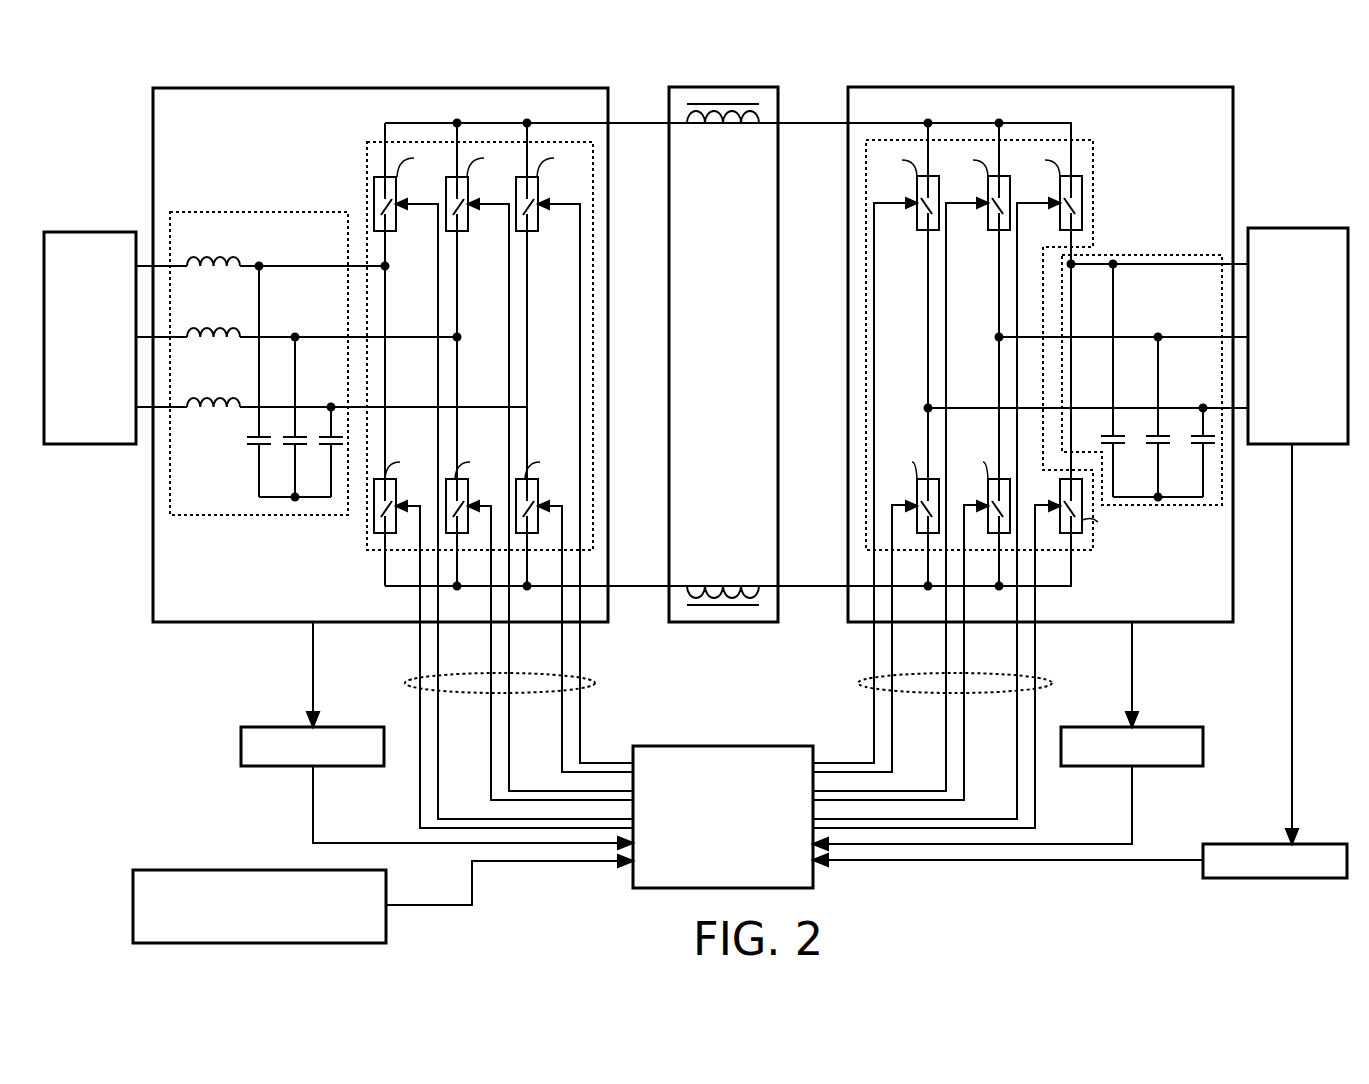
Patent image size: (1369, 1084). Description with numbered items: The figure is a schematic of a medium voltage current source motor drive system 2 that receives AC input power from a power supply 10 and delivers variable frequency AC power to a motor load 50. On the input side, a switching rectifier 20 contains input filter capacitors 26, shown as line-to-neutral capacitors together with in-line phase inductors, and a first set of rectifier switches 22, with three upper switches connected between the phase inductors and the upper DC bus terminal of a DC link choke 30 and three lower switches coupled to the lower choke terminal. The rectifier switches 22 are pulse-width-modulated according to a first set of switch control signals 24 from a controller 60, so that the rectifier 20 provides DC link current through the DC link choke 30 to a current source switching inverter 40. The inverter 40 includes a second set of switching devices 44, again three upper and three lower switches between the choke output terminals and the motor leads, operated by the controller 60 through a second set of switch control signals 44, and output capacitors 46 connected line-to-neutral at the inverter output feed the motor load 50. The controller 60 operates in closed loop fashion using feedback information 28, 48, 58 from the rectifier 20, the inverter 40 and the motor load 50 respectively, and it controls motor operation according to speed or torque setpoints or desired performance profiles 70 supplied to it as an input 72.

The medium voltage current source motor drive system 2 is at (122, 81).
The power supply 10 is at (90, 338).
The switching rectifier 20 is at (153, 110).
The rectifier switches 22 is at (367, 158).
The first set of switch control signals 24 is at (405, 683).
The input filter capacitors 26 is at (170, 472).
The feedback information from the rectifier 28 is at (241, 748).
The DC link choke 30 is at (728, 354).
The switching inverter 40 is at (1233, 112).
The second set of switching devices 44 is at (866, 158).
The output capacitors 46 is at (1222, 488).
The feedback information from the inverter 48 is at (1203, 748).
The motor load 50 is at (1298, 336).
The feedback information from the motor 58 is at (1203, 860).
The controller 60 is at (723, 817).
The setpoints or desired performance profiles 70 is at (133, 906).
The input 72 is at (473, 887).